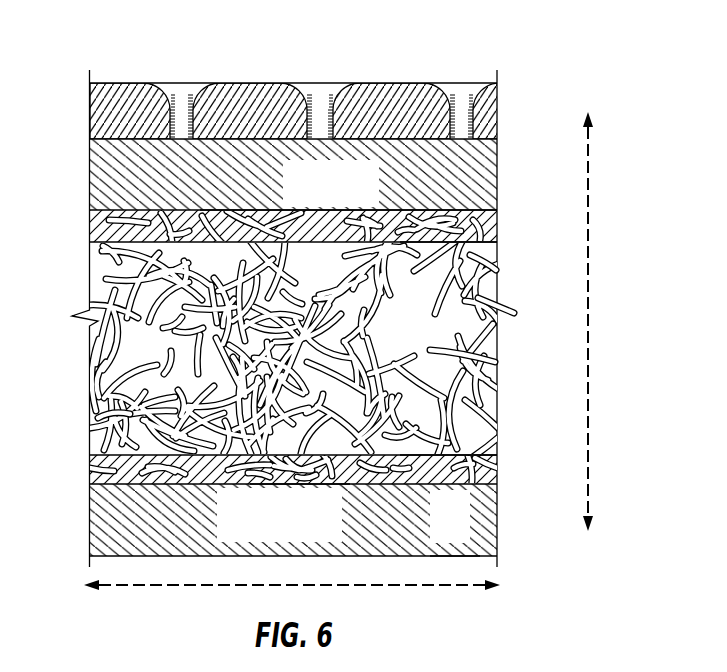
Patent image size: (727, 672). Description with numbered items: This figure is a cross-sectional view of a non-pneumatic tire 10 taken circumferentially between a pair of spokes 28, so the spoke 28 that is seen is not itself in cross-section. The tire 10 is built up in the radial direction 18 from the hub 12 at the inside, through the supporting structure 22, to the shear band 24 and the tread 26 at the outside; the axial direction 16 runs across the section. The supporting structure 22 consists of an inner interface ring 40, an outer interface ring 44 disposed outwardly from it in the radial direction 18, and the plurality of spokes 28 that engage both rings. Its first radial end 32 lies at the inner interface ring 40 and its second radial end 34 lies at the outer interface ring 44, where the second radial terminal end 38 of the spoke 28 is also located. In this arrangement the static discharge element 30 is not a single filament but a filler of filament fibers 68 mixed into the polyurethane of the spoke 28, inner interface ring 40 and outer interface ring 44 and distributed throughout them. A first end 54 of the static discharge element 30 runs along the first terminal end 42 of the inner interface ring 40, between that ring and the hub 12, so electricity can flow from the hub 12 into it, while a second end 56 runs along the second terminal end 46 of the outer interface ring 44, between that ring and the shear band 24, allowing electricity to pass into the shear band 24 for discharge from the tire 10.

The non-pneumatic tire 10 is at (500, 37).
The hub 12 is at (92, 518).
The axial direction 16 is at (393, 585).
The radial direction 18 is at (588, 323).
The supporting structure 22 is at (89, 280).
The shear band 24 is at (92, 185).
The tread 26 is at (107, 105).
The spokes 28 is at (95, 418).
The static discharge element 30 is at (497, 363).
The first radial end 32 is at (497, 465).
The second radial end 34 is at (497, 213).
The second radial terminal end 38 is at (497, 265).
The inner interface ring 40 is at (92, 465).
The first terminal end 42 is at (300, 491).
The outer interface ring 44 is at (92, 218).
The second terminal end 46 is at (293, 204).
The first end 54 is at (457, 485).
The second end 56 is at (497, 237).
The filament fibers 68 is at (498, 309).